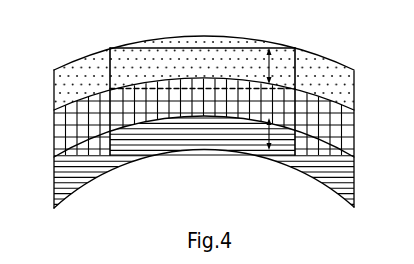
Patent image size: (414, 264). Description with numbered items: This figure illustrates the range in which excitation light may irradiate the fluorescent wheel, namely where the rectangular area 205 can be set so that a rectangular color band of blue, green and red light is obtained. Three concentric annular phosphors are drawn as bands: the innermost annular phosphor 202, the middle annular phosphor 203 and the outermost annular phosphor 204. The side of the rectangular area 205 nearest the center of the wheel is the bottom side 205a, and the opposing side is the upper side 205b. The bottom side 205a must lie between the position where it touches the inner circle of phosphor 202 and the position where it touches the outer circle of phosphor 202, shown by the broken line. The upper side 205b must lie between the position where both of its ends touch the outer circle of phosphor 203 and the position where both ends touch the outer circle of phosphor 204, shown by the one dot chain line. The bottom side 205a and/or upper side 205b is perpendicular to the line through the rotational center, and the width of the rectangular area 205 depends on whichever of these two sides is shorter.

The phosphor 202 is at (352, 173).
The phosphor 203 is at (352, 140).
The phosphor 204 is at (352, 103).
The rectangular area 205 is at (55, 118).
The bottom side 205a is at (152, 116).
The upper side 205b is at (172, 48).